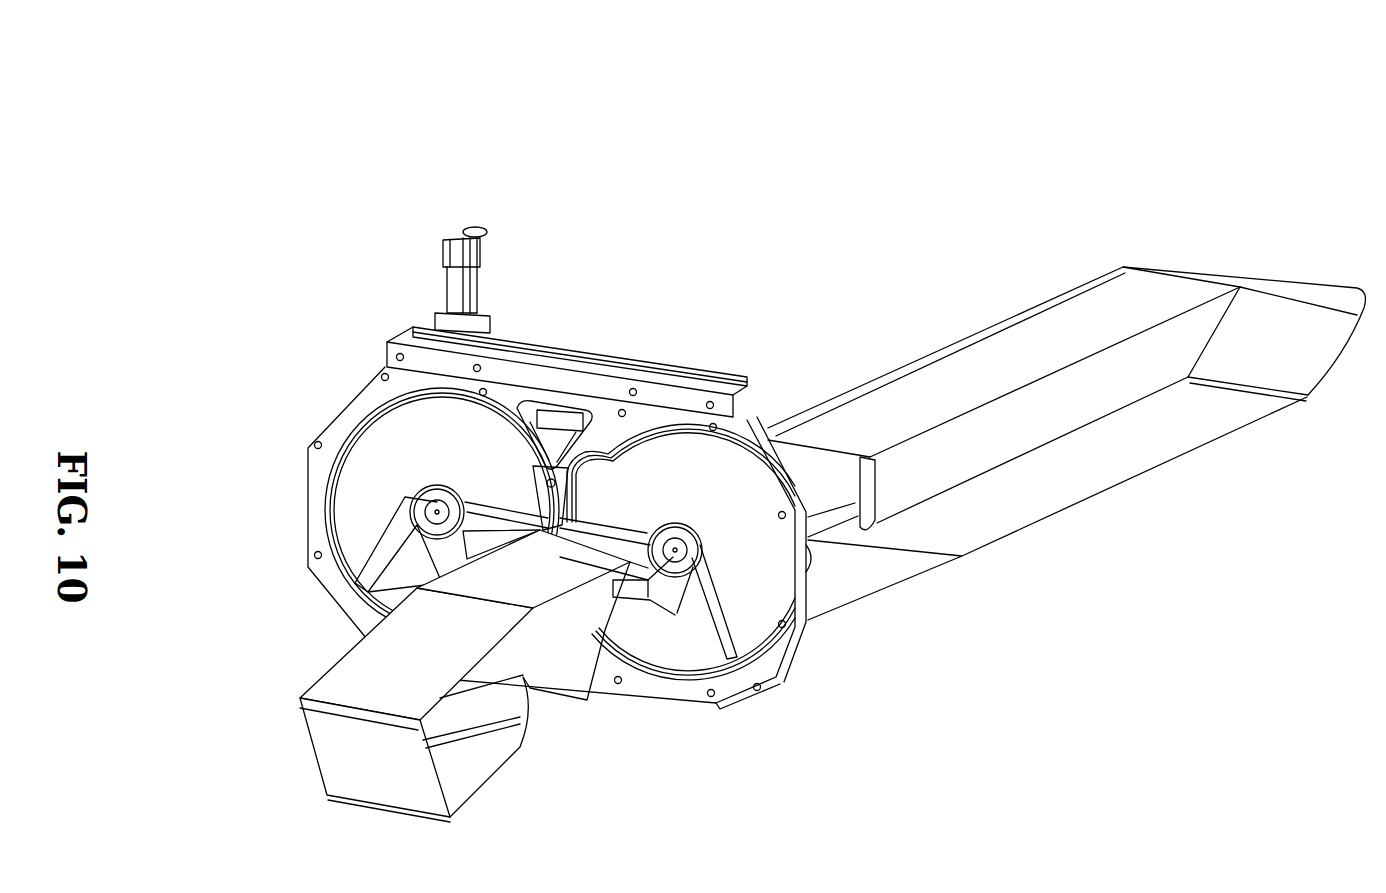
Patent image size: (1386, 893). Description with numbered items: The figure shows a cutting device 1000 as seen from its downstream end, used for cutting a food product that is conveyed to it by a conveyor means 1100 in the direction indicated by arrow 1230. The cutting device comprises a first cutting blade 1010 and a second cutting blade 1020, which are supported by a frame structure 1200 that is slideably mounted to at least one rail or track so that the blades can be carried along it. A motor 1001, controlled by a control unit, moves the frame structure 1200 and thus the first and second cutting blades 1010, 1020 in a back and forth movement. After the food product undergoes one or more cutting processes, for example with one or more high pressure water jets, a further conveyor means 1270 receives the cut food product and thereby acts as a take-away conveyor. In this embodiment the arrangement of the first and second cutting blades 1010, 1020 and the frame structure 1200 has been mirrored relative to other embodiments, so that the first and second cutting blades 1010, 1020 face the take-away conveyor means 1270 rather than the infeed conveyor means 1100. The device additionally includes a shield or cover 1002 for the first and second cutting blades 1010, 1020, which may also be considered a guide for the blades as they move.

The cutting device 1000 is at (170, 192).
The motor 1001 is at (457, 235).
The shield or cover 1002 is at (645, 684).
The first cutting blade 1010 is at (400, 513).
The second cutting blade 1020 is at (741, 597).
The conveyor means 1100 is at (809, 329).
The frame structure 1200 is at (637, 375).
The arrow indicating conveying direction 1230 is at (623, 541).
The conveyor means (take-away conveyor) 1270 is at (545, 591).